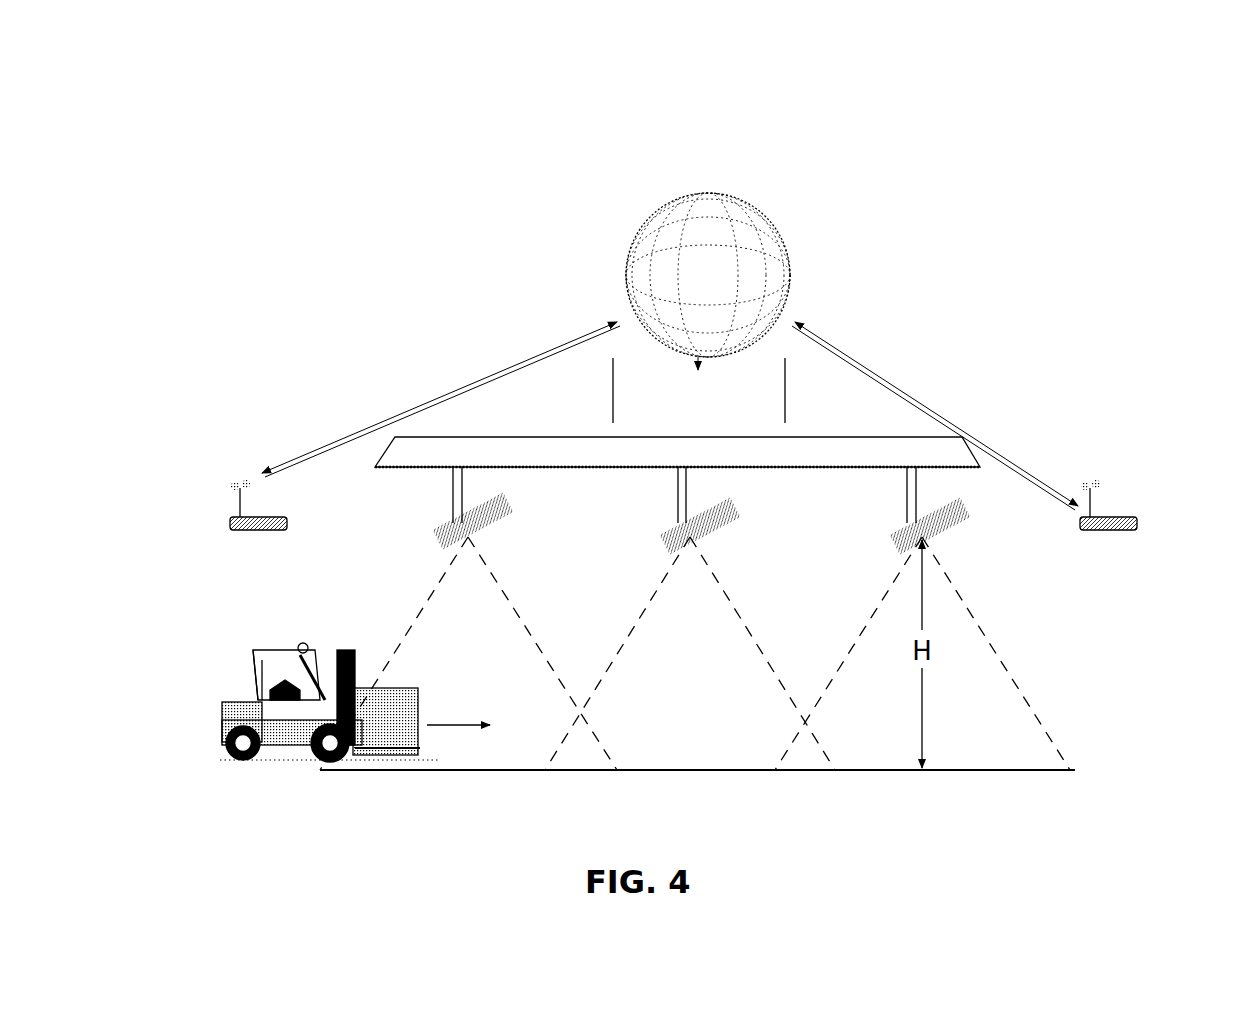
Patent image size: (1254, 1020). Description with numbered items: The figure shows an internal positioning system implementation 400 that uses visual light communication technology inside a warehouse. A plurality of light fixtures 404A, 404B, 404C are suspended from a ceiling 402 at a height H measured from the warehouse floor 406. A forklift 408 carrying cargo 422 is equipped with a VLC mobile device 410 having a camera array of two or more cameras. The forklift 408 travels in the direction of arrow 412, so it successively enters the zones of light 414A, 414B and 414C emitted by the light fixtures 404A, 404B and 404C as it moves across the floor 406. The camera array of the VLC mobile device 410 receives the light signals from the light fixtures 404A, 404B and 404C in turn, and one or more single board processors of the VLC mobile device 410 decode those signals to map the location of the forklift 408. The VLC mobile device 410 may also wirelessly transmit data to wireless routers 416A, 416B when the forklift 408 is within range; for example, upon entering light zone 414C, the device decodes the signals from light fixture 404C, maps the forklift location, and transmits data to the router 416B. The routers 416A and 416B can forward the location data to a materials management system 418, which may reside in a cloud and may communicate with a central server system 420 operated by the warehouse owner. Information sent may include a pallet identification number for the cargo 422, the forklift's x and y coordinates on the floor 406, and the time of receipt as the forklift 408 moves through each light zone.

The internal positioning system implementation 400 is at (1003, 118).
The ceiling 402 is at (462, 452).
The light fixture 404A is at (522, 496).
The light fixture 404B is at (745, 496).
The light fixture 404C is at (972, 496).
The warehouse floor 406 is at (443, 775).
The forklift 408 is at (252, 676).
The VLC mobile device 410 is at (306, 645).
The arrow 412 is at (443, 723).
The zone of light 414A is at (476, 586).
The zone of light 414B is at (698, 586).
The zone of light 414C is at (932, 586).
The wireless router 416A is at (265, 517).
The wireless router 416B is at (1112, 517).
The materials management system 418 is at (781, 236).
The central server system 420 is at (782, 422).
The cargo 422 is at (418, 737).